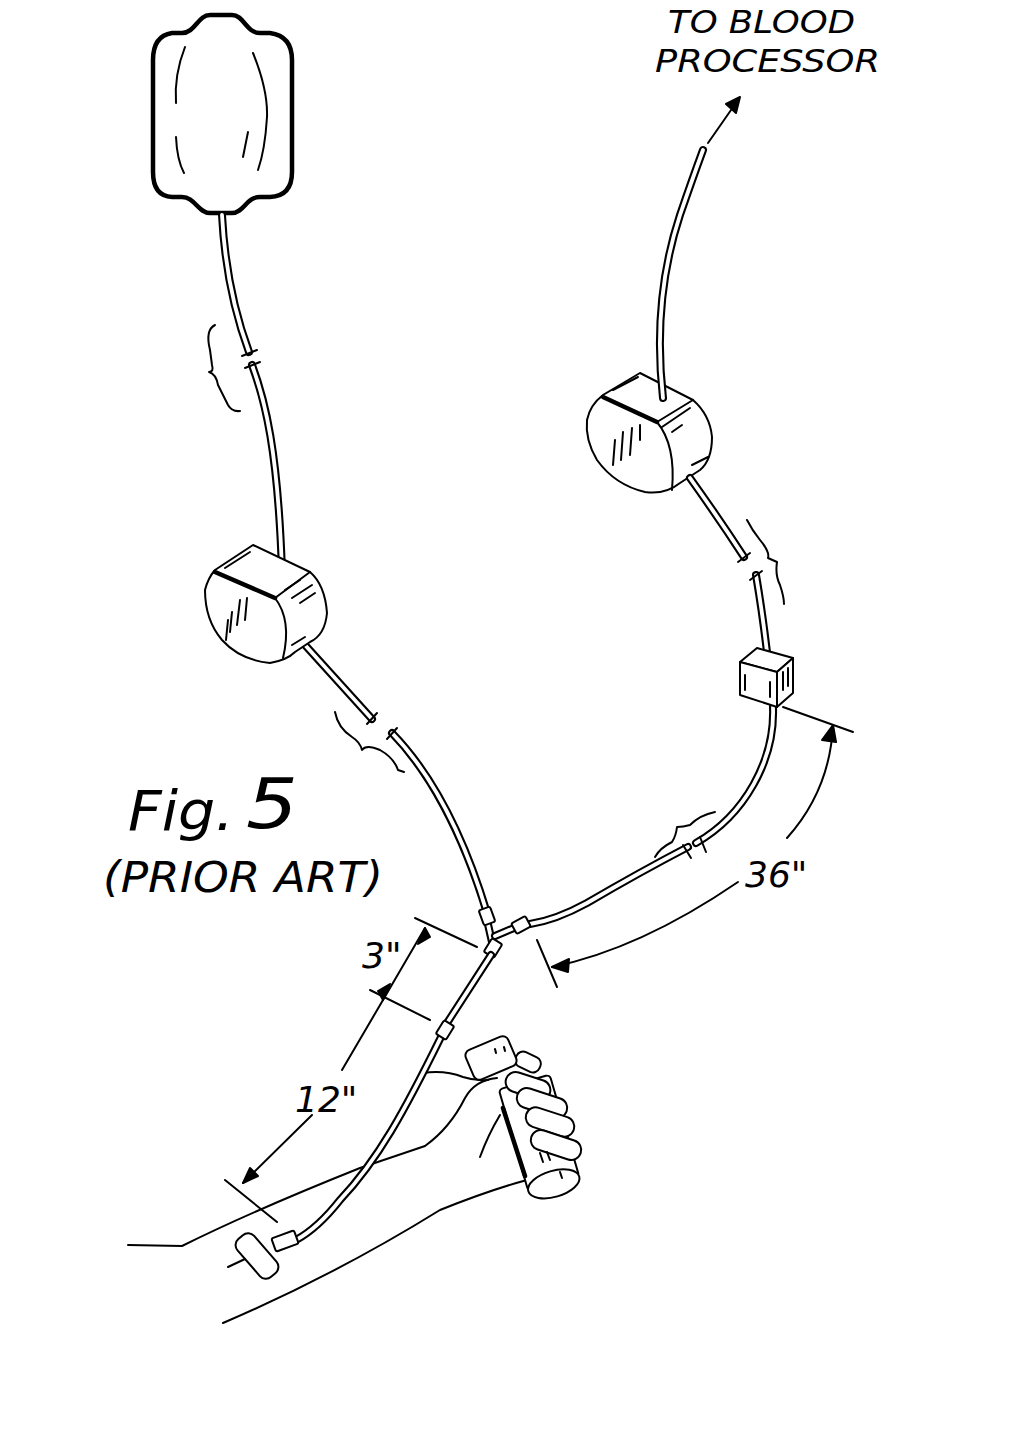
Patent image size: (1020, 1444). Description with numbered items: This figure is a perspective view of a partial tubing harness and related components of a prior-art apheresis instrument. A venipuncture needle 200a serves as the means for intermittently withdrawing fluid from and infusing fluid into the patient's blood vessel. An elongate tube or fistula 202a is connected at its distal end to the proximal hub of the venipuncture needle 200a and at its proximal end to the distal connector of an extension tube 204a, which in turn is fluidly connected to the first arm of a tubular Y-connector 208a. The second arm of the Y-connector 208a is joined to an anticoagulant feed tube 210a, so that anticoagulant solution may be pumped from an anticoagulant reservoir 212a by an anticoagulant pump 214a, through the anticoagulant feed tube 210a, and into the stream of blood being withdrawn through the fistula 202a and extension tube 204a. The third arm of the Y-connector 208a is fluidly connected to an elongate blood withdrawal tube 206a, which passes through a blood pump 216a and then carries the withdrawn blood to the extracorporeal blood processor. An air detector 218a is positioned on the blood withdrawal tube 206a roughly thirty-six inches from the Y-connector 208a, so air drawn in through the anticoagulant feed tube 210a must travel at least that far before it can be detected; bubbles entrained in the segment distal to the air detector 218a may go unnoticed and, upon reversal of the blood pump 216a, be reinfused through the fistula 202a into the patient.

The venipuncture needle 200a is at (285, 1249).
The fistula 202a is at (538, 1068).
The extension tube 204a is at (475, 990).
The blood withdrawal tube 206a is at (672, 272).
The tubular Y-connector 208a is at (500, 935).
The anticoagulant feed tube 210a is at (275, 443).
The anticoagulant reservoir 212a is at (277, 123).
The anticoagulant pump 214a is at (327, 602).
The blood pump 216a is at (712, 430).
The air detector 218a is at (797, 683).